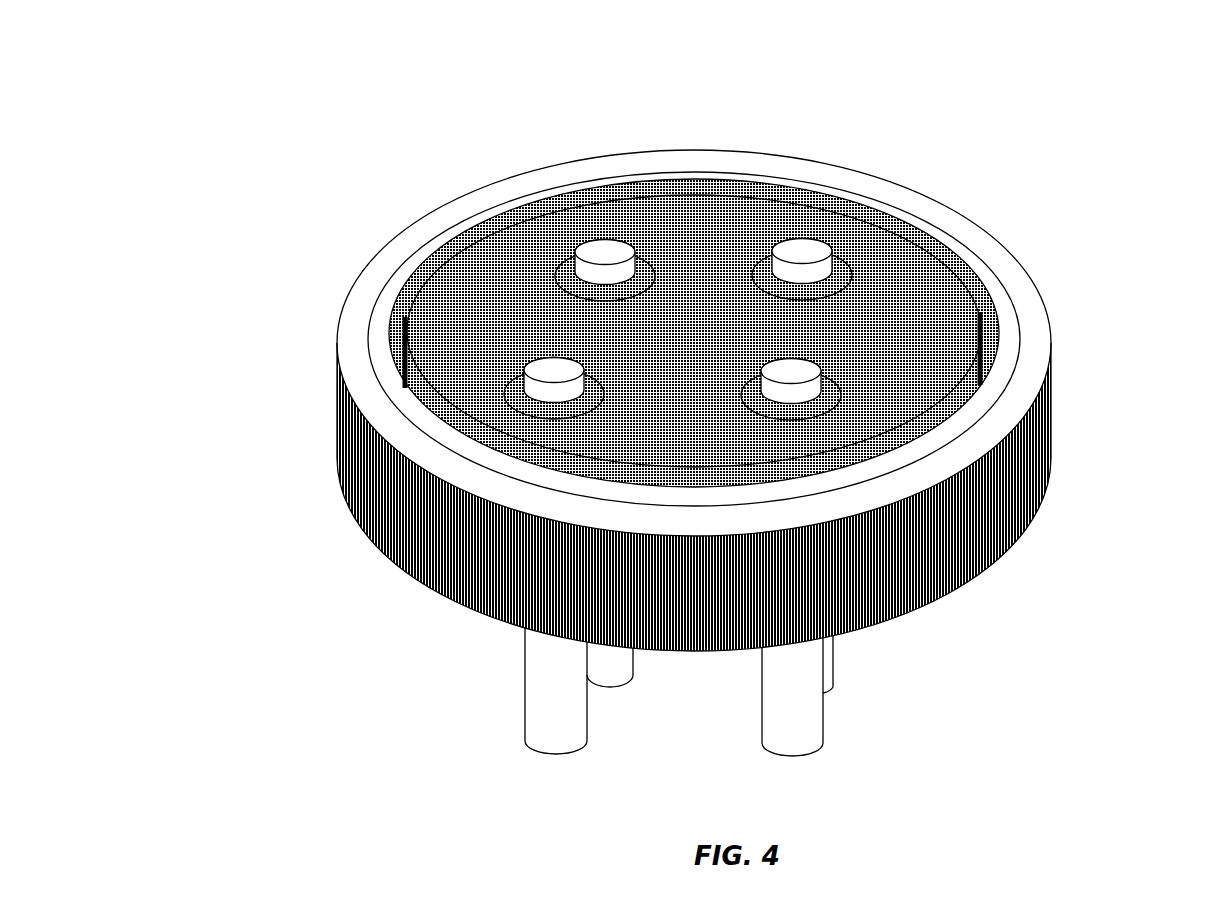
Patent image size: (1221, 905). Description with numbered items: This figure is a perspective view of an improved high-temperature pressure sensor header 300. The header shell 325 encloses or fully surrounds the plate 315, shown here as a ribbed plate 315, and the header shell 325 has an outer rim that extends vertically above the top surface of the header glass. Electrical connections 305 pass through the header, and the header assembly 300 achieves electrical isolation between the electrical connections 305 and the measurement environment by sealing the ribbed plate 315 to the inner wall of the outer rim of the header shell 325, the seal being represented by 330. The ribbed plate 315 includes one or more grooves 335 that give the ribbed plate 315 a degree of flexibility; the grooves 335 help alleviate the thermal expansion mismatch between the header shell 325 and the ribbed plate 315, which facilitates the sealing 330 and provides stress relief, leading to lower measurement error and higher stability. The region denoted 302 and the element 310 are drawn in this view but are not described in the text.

The pressure sensor header 300 is at (1160, 112).
The top surface of header 302 is at (733, 336).
The electrical connections 305 is at (793, 370).
The pin insulator 310 is at (842, 277).
The ribbed plate 315 is at (373, 308).
The header shell 325 is at (493, 567).
The sealing 330 is at (638, 174).
The grooves 335 is at (398, 308).